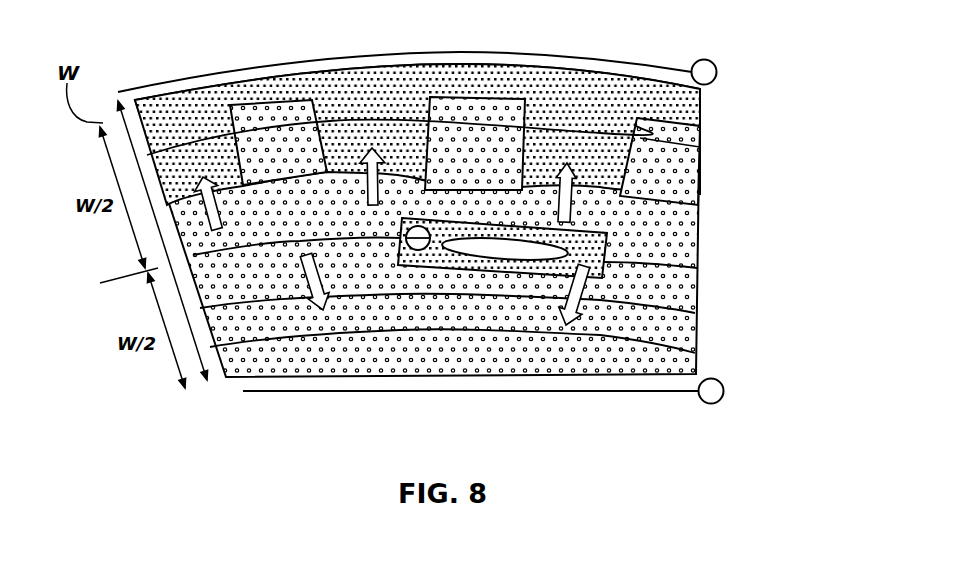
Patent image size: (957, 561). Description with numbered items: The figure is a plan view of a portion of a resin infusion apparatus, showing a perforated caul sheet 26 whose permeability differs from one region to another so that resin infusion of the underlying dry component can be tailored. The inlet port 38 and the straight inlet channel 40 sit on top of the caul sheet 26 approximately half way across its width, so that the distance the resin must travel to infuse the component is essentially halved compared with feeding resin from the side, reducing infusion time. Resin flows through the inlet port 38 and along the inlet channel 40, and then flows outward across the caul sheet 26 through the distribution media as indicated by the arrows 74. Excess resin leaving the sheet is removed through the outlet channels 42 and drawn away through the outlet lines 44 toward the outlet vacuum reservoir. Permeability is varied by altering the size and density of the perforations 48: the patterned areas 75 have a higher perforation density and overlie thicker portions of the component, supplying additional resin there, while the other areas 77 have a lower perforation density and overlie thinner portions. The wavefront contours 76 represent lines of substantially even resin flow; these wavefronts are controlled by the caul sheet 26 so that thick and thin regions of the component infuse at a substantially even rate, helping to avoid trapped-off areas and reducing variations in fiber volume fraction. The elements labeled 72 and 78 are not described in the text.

The caul sheet 26 is at (670, 293).
The inlet port 38 is at (416, 227).
The inlet channel 40 is at (665, 262).
The outlet channels 42 is at (638, 63).
The outlet lines 44 is at (668, 434).
The perforations 48 is at (682, 106).
The first pad segment 72 is at (277, 138).
The arrows 74 is at (364, 153).
The patterned areas 75 is at (180, 110).
The wavefront contours 76 is at (485, 187).
The other areas 77 is at (268, 280).
The downward flow arrow 78 is at (566, 322).